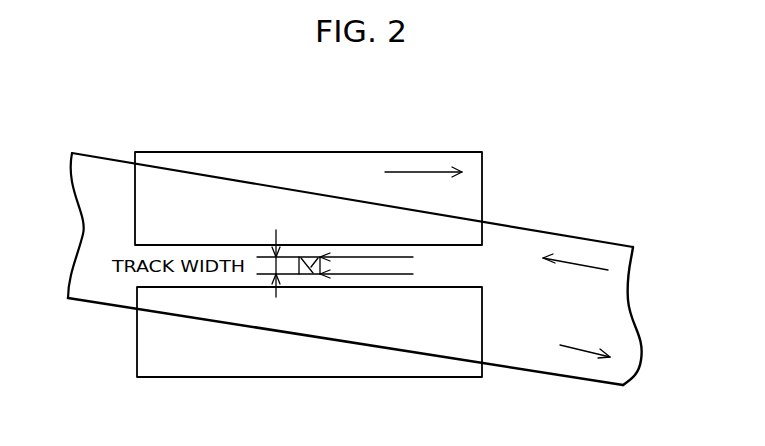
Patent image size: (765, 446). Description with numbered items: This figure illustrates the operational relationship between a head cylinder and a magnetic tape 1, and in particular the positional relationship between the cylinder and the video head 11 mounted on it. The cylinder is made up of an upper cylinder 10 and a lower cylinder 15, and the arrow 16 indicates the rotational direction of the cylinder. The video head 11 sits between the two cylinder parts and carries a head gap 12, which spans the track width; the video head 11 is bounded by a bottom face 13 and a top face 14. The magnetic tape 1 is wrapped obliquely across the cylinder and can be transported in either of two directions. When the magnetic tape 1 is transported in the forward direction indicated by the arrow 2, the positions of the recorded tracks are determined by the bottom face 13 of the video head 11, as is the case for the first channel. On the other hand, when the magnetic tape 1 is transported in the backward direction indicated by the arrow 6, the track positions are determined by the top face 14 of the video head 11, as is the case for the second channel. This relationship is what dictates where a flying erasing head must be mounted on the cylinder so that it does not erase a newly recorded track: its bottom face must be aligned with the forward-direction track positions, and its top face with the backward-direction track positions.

The magnetic tape 1 is at (512, 338).
The arrow indicating forward direction 2 is at (562, 348).
The arrow indicating backward direction 6 is at (585, 265).
The upper cylinder 10 is at (218, 160).
The video head 11 is at (313, 275).
The head gap 12 is at (306, 257).
The bottom face of the video head 13 is at (382, 275).
The top face of the video head 14 is at (382, 259).
The lower cylinder 15 is at (198, 350).
The arrow indicating rotational direction of the cylinder 16 is at (418, 170).